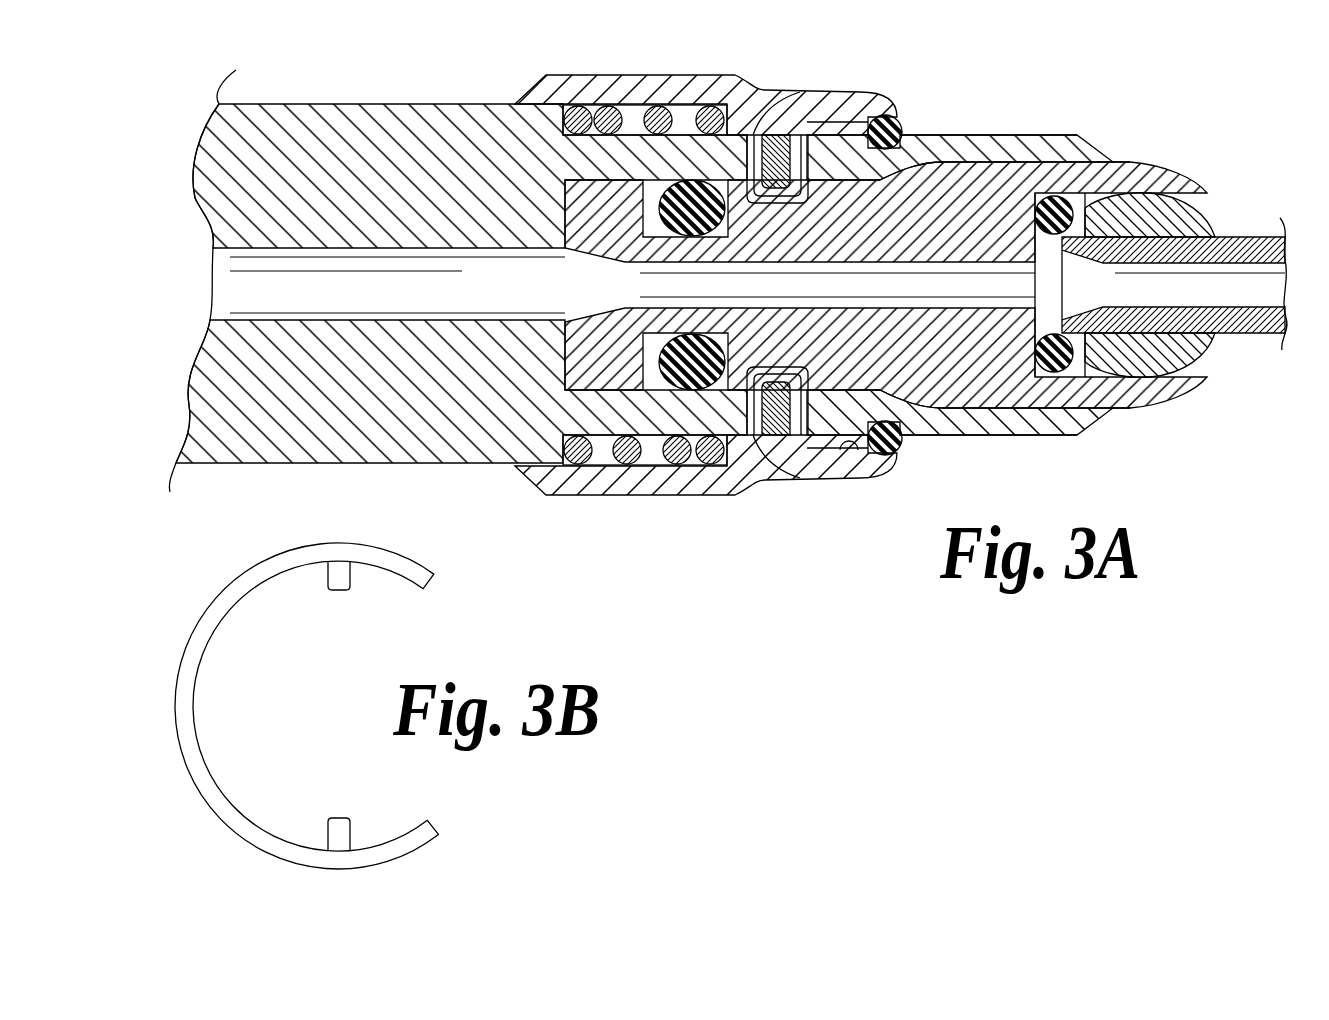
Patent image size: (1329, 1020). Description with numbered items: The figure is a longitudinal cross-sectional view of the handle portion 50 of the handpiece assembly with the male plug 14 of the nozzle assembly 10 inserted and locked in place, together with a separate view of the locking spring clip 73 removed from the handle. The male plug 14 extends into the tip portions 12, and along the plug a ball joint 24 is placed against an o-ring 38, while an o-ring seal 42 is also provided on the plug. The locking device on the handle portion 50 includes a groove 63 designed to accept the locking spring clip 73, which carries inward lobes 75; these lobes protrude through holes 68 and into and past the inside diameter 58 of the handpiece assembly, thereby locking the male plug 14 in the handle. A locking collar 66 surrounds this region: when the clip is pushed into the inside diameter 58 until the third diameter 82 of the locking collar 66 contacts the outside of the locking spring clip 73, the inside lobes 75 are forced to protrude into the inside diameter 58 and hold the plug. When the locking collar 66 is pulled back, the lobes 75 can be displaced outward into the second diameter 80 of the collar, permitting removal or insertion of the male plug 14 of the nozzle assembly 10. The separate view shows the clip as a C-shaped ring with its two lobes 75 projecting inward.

In FIG. 3A, the nozzle assembly 10 is at (1243, 357).
In FIG. 3A, the tip portions 12 is at (1255, 232).
In FIG. 3A, the male plug 14 is at (611, 212).
In FIG. 3A, the ball joint 24 is at (1205, 215).
In FIG. 3A, the o-ring 38 is at (1052, 198).
In FIG. 3A, the o-ring seal 42 is at (680, 205).
In FIG. 3A, the handle portion 50 is at (303, 95).
In FIG. 3A, the inside diameter 58 is at (848, 137).
In FIG. 3A, the groove 63 is at (757, 413).
In FIG. 3A, the locking collar 66 is at (715, 75).
In FIG. 3A, the holes 68 is at (753, 133).
In FIG. 3A, the locking spring clip 73 is at (777, 447).
In FIG. 3B, the locking spring clip 73 is at (400, 553).
In FIG. 3A, the lobes 75 is at (776, 378).
In FIG. 3B, the lobes 75 is at (340, 592).
In FIG. 3A, the second diameter 80 is at (858, 452).
In FIG. 3A, the third diameter 82 is at (790, 132).